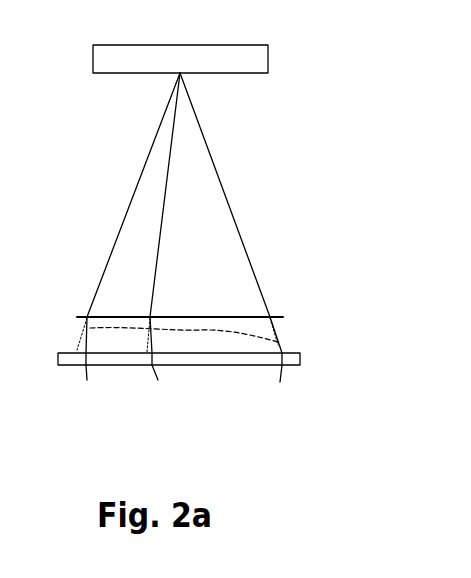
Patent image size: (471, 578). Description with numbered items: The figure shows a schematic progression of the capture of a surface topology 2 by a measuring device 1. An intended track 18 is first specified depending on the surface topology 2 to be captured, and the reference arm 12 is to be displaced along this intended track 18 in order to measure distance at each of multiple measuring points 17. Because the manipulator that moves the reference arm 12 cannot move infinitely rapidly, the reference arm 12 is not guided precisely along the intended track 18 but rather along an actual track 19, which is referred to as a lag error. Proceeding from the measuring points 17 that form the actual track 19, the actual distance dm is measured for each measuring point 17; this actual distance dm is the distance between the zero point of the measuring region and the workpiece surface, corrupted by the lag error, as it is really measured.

The measuring device 1 is at (180, 59).
The reference arm 12 is at (128, 208).
The actual track 19 is at (84, 310).
The intended track 18 is at (277, 313).
The actual distance dm is at (280, 345).
The surface topology 2 is at (218, 355).
The measuring points 17 is at (87, 380).